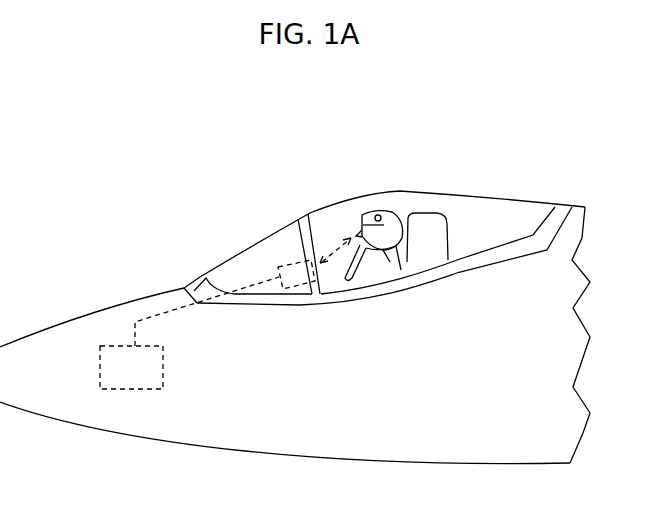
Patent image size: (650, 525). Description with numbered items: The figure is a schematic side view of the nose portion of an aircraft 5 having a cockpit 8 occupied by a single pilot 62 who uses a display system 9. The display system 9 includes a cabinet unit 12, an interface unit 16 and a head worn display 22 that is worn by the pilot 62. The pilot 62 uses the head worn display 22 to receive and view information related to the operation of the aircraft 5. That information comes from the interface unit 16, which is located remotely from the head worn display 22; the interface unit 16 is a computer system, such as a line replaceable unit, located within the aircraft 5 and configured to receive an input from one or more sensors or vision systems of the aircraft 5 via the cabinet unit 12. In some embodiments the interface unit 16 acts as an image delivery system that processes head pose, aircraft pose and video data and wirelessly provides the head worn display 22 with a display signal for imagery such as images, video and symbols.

The aircraft 5 is at (85, 420).
The cockpit 8 is at (472, 205).
The display system 9 is at (246, 330).
The cabinet unit 12 is at (117, 346).
The interface unit 16 is at (293, 262).
The head worn display 22 is at (360, 232).
The pilot 62 is at (384, 268).